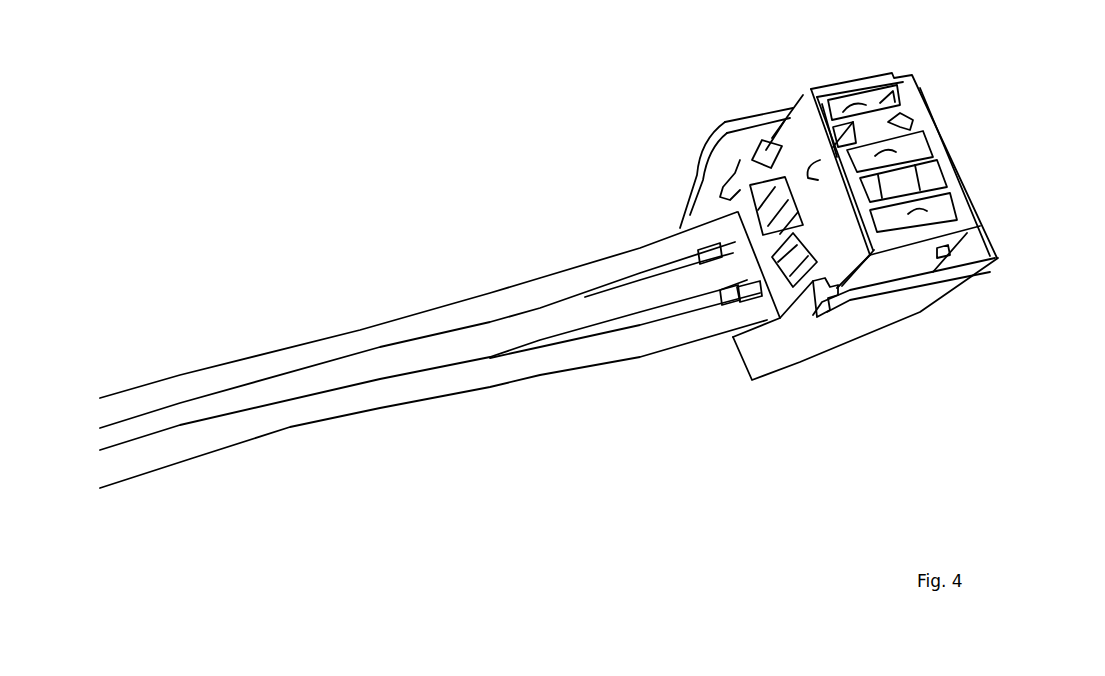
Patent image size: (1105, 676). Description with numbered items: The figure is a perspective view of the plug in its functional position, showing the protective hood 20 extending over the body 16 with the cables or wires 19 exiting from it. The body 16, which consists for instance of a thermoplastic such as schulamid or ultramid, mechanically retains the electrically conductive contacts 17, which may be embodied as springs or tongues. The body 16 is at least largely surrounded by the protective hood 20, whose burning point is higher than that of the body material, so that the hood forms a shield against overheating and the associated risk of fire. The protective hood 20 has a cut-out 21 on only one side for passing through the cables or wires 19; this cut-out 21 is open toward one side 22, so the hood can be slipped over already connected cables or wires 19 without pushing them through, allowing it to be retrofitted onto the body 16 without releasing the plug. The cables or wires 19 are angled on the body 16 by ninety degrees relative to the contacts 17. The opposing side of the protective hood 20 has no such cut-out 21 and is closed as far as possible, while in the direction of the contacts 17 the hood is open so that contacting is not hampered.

The body 16 is at (968, 338).
The contact 17 is at (857, 40).
The cable or wire 19 is at (562, 360).
The protective hood 20 is at (838, 390).
The cut-out 21 is at (718, 168).
The side 22 is at (748, 155).